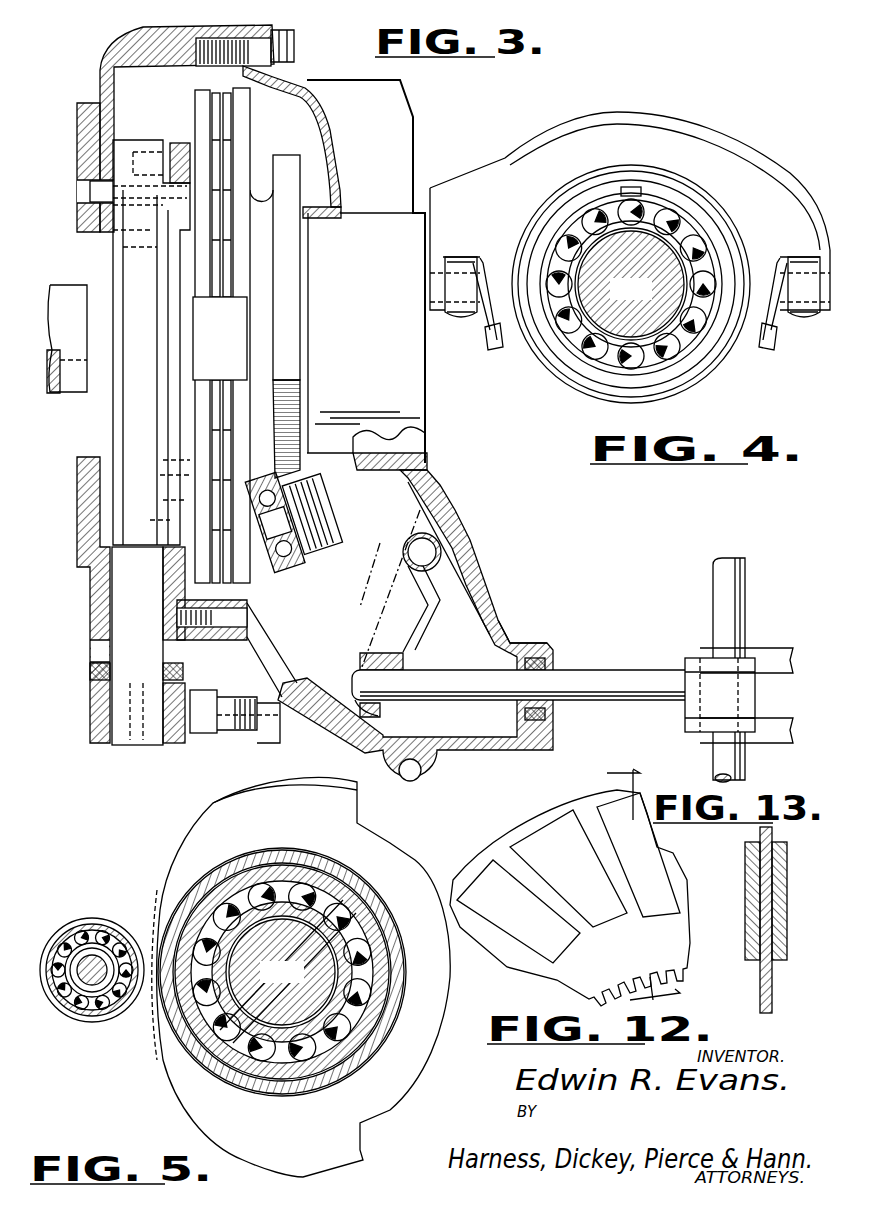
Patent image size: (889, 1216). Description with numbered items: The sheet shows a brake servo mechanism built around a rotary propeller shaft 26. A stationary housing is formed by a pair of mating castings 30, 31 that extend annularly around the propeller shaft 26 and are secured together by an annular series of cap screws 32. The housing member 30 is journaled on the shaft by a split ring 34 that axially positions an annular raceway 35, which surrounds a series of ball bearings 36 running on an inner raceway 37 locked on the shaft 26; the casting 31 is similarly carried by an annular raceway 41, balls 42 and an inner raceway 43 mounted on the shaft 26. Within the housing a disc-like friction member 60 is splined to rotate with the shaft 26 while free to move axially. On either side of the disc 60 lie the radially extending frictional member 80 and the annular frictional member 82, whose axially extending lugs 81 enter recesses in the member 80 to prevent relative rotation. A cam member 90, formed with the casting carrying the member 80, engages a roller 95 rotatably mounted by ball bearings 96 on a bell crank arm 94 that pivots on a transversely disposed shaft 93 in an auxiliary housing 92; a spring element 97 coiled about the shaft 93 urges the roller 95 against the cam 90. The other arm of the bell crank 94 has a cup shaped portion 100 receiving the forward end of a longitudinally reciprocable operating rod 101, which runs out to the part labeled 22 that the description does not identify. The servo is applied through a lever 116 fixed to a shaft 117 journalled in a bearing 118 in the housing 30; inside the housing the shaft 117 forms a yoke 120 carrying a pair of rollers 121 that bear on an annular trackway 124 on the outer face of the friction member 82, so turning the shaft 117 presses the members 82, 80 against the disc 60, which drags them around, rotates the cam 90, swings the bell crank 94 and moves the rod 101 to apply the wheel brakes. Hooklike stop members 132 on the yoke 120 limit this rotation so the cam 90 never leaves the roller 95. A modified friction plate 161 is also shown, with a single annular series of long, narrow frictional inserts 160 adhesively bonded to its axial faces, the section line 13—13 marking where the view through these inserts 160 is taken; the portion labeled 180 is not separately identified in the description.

In FIG. 3, the shaft 22 is at (730, 602).
In FIG. 3, the propeller shaft 26 is at (70, 290).
In FIG. 4, the propeller shaft 26 is at (631, 284).
In FIG. 5, the propeller shaft 26 is at (282, 972).
In FIG. 3, the housing member 30 is at (98, 78).
In FIG. 3, the casting 31 is at (283, 74).
In FIG. 3, the cap screws 32 is at (295, 45).
In FIG. 4, the split ring 34 is at (583, 365).
In FIG. 4, the annular raceway 35 is at (678, 366).
In FIG. 4, the ball bearings 36 is at (664, 368).
In FIG. 4, the inner raceway 37 is at (612, 352).
In FIG. 5, the annular raceway 41 is at (363, 1028).
In FIG. 5, the balls 42 is at (370, 970).
In FIG. 5, the inner raceway 43 is at (347, 903).
In FIG. 3, the friction member 60 is at (217, 92).
In FIG. 3, the frictional member 80 is at (240, 148).
In FIG. 3, the lugs 81 is at (220, 338).
In FIG. 3, the annular frictional member 82 is at (200, 109).
In FIG. 3, the cam member 90 is at (292, 180).
In FIG. 5, the cam member 90 is at (205, 1117).
In FIG. 3, the auxiliary housing 92 is at (470, 565).
In FIG. 3, the shaft 93 is at (460, 520).
In FIG. 3, the bell crank arm 94 is at (445, 622).
In FIG. 5, the bell crank arm 94 is at (92, 990).
In FIG. 3, the roller 95 is at (312, 487).
In FIG. 5, the roller 95 is at (92, 920).
In FIG. 3, the ball bearings 96 is at (355, 438).
In FIG. 5, the ball bearings 96 is at (100, 1020).
In FIG. 3, the spring element 97 is at (477, 600).
In FIG. 3, the cup shaped portion 100 is at (378, 716).
In FIG. 3, the operating rod 101 is at (433, 678).
In FIG. 3, the lever 116 is at (92, 718).
In FIG. 3, the shaft 117 is at (140, 745).
In FIG. 3, the bearing 118 is at (97, 588).
In FIG. 3, the yoke 120 is at (118, 432).
In FIG. 4, the yoke 120 is at (648, 120).
In FIG. 3, the rollers 121 is at (175, 145).
In FIG. 4, the rollers 121 is at (458, 325).
In FIG. 3, the annular trackway 124 is at (188, 470).
In FIG. 4, the hooklike stop members 132 is at (492, 352).
In FIG. 12, the frictional inserts 160 is at (640, 815).
In FIG. 13, the frictional inserts 160 is at (753, 877).
In FIG. 12, the friction plate 161 is at (663, 933).
In FIG. 13, the friction plate 161 is at (770, 980).
In FIG. 12, the gear segment 180 is at (493, 887).
In FIG. 12, the section line 13 is at (623, 891).